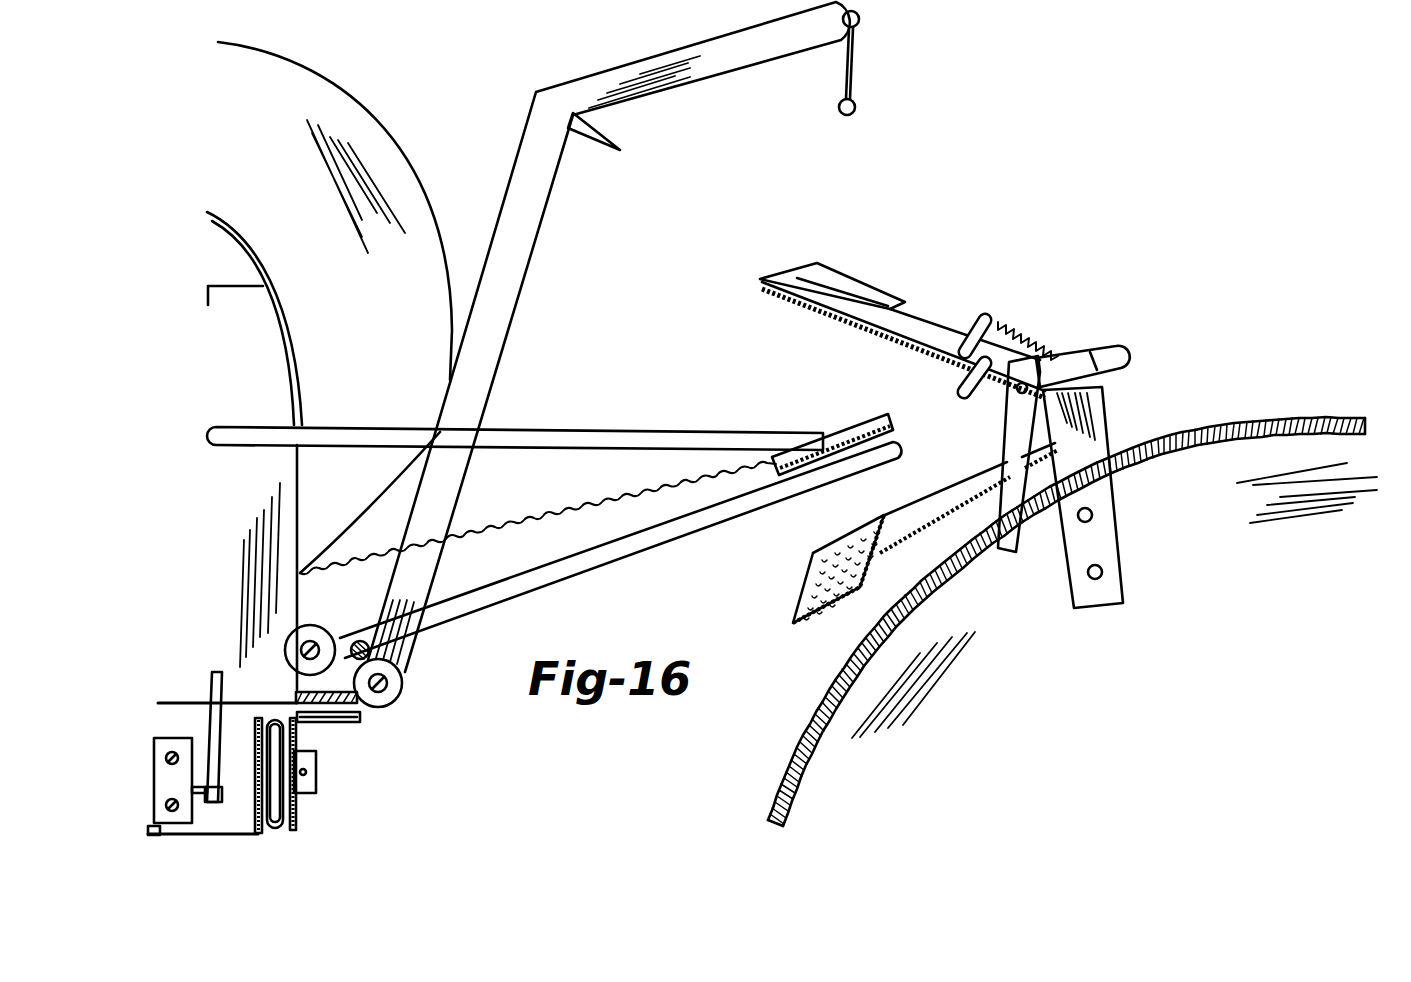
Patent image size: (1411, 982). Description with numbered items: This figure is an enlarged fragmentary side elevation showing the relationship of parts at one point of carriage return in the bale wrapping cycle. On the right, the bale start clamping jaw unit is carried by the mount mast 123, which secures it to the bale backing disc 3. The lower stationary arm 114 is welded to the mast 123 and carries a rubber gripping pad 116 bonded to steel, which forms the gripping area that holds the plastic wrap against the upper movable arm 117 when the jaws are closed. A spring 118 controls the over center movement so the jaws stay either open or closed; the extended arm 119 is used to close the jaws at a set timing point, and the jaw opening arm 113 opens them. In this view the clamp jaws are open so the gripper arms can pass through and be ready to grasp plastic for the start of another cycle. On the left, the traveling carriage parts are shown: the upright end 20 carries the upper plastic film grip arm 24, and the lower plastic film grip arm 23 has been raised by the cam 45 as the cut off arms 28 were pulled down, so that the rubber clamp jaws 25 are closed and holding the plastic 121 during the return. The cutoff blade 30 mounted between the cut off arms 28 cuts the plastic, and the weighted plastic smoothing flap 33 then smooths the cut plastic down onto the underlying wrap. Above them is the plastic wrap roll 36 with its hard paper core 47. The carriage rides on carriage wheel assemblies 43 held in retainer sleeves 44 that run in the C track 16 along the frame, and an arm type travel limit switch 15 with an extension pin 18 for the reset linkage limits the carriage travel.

The bale backing disc 3 is at (870, 693).
The arm type travel limit switch 15 is at (173, 818).
The C track 16 is at (277, 826).
The extension pin 18 is at (357, 718).
The upright end 20 is at (265, 458).
The lower plastic film grip arm 23 is at (597, 548).
The upper plastic film grip arm 24 is at (560, 430).
The rubber clamp jaws 25 is at (769, 455).
The cut off arms 28 is at (493, 323).
The cutoff blade 30 is at (600, 143).
The plastic smoothing flap 33 is at (851, 65).
The plastic wrap roll 36 is at (417, 180).
The carriage wheel assembly 43 is at (287, 802).
The retainer sleeve 44 is at (306, 769).
The cam 45 is at (360, 640).
The hard paper core 47 is at (283, 312).
The jaw opening arm 113 is at (1012, 520).
The lower stationary arm 114 is at (924, 508).
The rubber gripping pad 116 is at (848, 287).
The upper movable arm 117 is at (908, 328).
The spring 118 is at (1042, 323).
The extended arm 119 is at (965, 378).
The plastic 121 is at (903, 431).
The mount mast 123 is at (1092, 528).